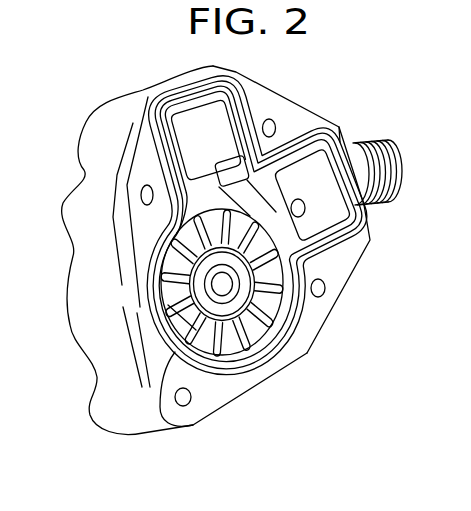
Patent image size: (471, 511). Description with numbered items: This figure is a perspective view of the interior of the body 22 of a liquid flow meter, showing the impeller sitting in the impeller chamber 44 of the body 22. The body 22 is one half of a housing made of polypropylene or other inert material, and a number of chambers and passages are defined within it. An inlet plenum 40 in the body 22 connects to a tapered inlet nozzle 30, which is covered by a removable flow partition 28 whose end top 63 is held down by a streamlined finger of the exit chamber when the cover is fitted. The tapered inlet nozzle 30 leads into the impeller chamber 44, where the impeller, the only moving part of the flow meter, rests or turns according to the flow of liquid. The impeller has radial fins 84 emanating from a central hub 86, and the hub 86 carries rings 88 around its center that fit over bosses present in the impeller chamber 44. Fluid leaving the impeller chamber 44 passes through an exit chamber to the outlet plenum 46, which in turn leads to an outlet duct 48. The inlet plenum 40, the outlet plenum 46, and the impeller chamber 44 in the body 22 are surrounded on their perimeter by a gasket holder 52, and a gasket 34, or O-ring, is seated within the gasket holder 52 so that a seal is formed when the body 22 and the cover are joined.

The body half 22 is at (258, 73).
The flow partition 28 is at (268, 228).
The inlet plenum 40 is at (219, 150).
The outlet plenum 46 is at (332, 191).
The gasket holder 52 is at (340, 127).
The outlet duct 48 is at (378, 199).
The gasket 34 is at (362, 262).
The end top 63 is at (306, 255).
The tapered inlet nozzle 30 is at (292, 275).
The rings 88 is at (262, 342).
The central hub 86 is at (236, 366).
The radial fins 84 is at (197, 317).
The impeller chamber 44 is at (160, 398).